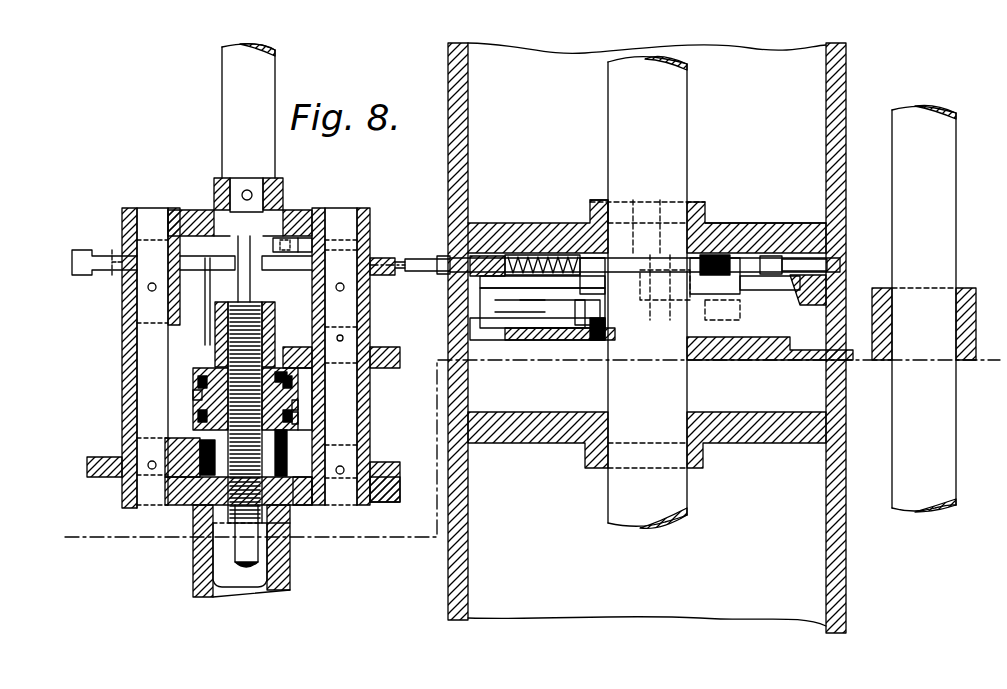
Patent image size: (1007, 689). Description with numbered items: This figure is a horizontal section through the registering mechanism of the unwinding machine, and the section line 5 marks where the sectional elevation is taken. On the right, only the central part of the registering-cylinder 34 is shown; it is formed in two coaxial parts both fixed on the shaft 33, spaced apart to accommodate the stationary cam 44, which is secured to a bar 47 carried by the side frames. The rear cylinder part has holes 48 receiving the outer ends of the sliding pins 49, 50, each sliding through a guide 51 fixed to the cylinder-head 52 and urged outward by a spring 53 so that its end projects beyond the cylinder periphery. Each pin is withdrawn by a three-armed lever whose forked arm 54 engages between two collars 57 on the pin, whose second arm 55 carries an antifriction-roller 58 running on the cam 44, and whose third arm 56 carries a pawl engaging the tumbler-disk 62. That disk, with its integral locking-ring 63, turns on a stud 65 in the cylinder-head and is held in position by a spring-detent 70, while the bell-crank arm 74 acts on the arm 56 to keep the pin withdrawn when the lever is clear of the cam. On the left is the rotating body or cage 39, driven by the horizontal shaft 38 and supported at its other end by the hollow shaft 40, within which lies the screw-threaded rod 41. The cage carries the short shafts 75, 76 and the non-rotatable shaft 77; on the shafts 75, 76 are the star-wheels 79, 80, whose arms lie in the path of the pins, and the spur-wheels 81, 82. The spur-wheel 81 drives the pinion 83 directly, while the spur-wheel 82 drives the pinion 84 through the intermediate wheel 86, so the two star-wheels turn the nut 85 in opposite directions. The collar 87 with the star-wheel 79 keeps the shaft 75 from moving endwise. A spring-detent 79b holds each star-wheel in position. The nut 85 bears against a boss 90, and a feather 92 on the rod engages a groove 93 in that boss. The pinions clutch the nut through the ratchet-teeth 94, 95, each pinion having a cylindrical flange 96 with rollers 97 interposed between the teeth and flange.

The section line 5 5 is at (529, 445).
The shaft 33 is at (647, 292).
The registering-cylinder 34 is at (455, 132).
The horizontal shaft 38 is at (248, 111).
The body or cage 39 is at (122, 212).
The hollow shaft 40 is at (193, 548).
The screw-threaded rod 41 is at (252, 302).
The stationary cam 44 is at (500, 340).
The bar 47 is at (924, 308).
The holes 48 is at (450, 256).
The pin 49 is at (436, 274).
The pin 50 is at (806, 290).
The guide 51 is at (585, 258).
The cylinder-head 52 is at (795, 238).
The spring 53 is at (530, 276).
The forked arm of three-armed lever 54 is at (486, 254).
The second arm of three-armed lever 55 is at (520, 340).
The third arm of three-armed lever 56 is at (510, 312).
The collars 57 is at (488, 254).
The antifriction-roller 58 is at (592, 345).
The tumbler-disk 62 is at (573, 340).
The locking-ring 63 is at (680, 260).
The stud 65 is at (712, 345).
The spring-detent 70 is at (592, 200).
The arm of bell-crank lever 74 is at (540, 340).
The short shaft 75 is at (300, 382).
The short shaft 76 is at (193, 380).
The short shaft 77 is at (200, 212).
The star-wheel 79 is at (372, 275).
The spring-detent 79b is at (292, 238).
The star-wheel 80 is at (108, 270).
The spur-wheel 81 is at (398, 368).
The spur-wheel 82 is at (90, 470).
The pinion 83 is at (212, 340).
The pinion 84 is at (370, 505).
The nut 85 is at (193, 393).
The intermediate wheel 86 is at (193, 430).
The collar 87 is at (400, 470).
The boss 90 is at (300, 505).
The feather 92 is at (244, 510).
The groove 93 is at (275, 525).
The ratchet-teeth 94 is at (298, 404).
The ratchet-teeth 95 is at (298, 418).
The cylindrical flange 96 is at (198, 380).
The rollers 97 is at (288, 378).